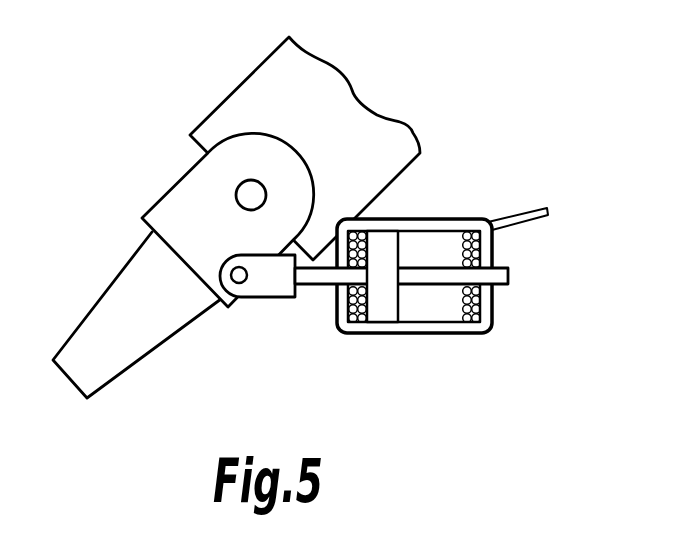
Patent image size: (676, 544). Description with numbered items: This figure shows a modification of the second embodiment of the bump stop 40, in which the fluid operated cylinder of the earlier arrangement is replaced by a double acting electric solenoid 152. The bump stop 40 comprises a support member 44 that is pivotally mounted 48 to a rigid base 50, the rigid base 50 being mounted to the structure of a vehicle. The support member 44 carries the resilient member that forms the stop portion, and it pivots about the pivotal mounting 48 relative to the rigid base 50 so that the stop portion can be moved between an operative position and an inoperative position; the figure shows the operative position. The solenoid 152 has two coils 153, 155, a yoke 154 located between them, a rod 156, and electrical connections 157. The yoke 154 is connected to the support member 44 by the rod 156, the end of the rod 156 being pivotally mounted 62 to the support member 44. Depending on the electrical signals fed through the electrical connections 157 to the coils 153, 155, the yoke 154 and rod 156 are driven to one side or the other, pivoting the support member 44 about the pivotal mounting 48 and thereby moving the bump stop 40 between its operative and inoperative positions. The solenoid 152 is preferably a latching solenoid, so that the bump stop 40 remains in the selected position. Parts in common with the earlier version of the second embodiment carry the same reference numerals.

The bump stop 40 is at (140, 100).
The support member 44 is at (173, 208).
The pivotal mounting 48 is at (252, 195).
The rigid base 50 is at (257, 97).
The pivotal mounting 62 is at (241, 277).
The double acting electric solenoid 152 is at (448, 202).
The coil 153 is at (357, 328).
The yoke 154 is at (385, 312).
The coil 155 is at (478, 313).
The rod 156 is at (502, 275).
The electrical connections 157 is at (520, 210).